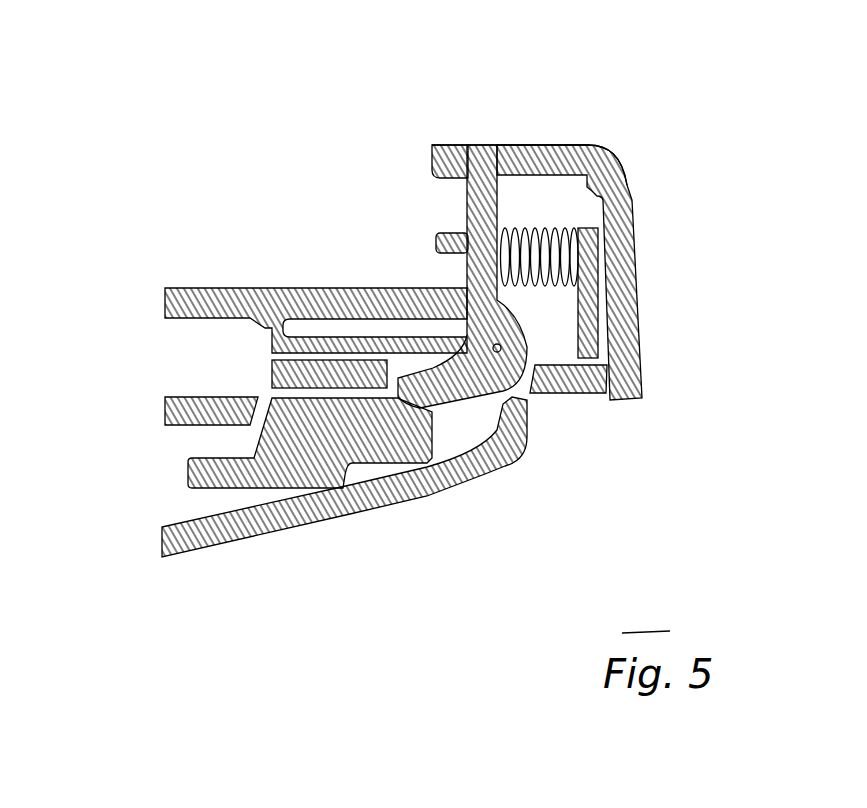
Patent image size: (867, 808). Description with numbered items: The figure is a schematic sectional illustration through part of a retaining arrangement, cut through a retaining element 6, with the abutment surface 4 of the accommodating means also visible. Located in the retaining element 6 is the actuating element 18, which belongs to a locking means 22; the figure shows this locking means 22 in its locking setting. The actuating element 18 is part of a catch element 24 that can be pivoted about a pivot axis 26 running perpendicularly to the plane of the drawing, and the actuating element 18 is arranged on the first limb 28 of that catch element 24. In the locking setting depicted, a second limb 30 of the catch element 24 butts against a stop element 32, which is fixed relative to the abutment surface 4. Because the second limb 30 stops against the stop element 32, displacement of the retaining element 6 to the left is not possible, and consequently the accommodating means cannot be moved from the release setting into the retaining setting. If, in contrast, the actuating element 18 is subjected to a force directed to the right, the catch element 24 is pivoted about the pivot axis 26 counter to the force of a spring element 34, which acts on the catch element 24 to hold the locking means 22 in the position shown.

The abutment surface 4 is at (230, 288).
The retaining element 6 is at (554, 117).
The actuating element 18 is at (437, 238).
The locking means 22 is at (554, 413).
The catch element 24 is at (627, 248).
The pivot axis 26 is at (501, 347).
The first limb 28 is at (498, 210).
The second limb 30 is at (452, 490).
The stop element 32 is at (290, 477).
The spring element 34 is at (503, 240).